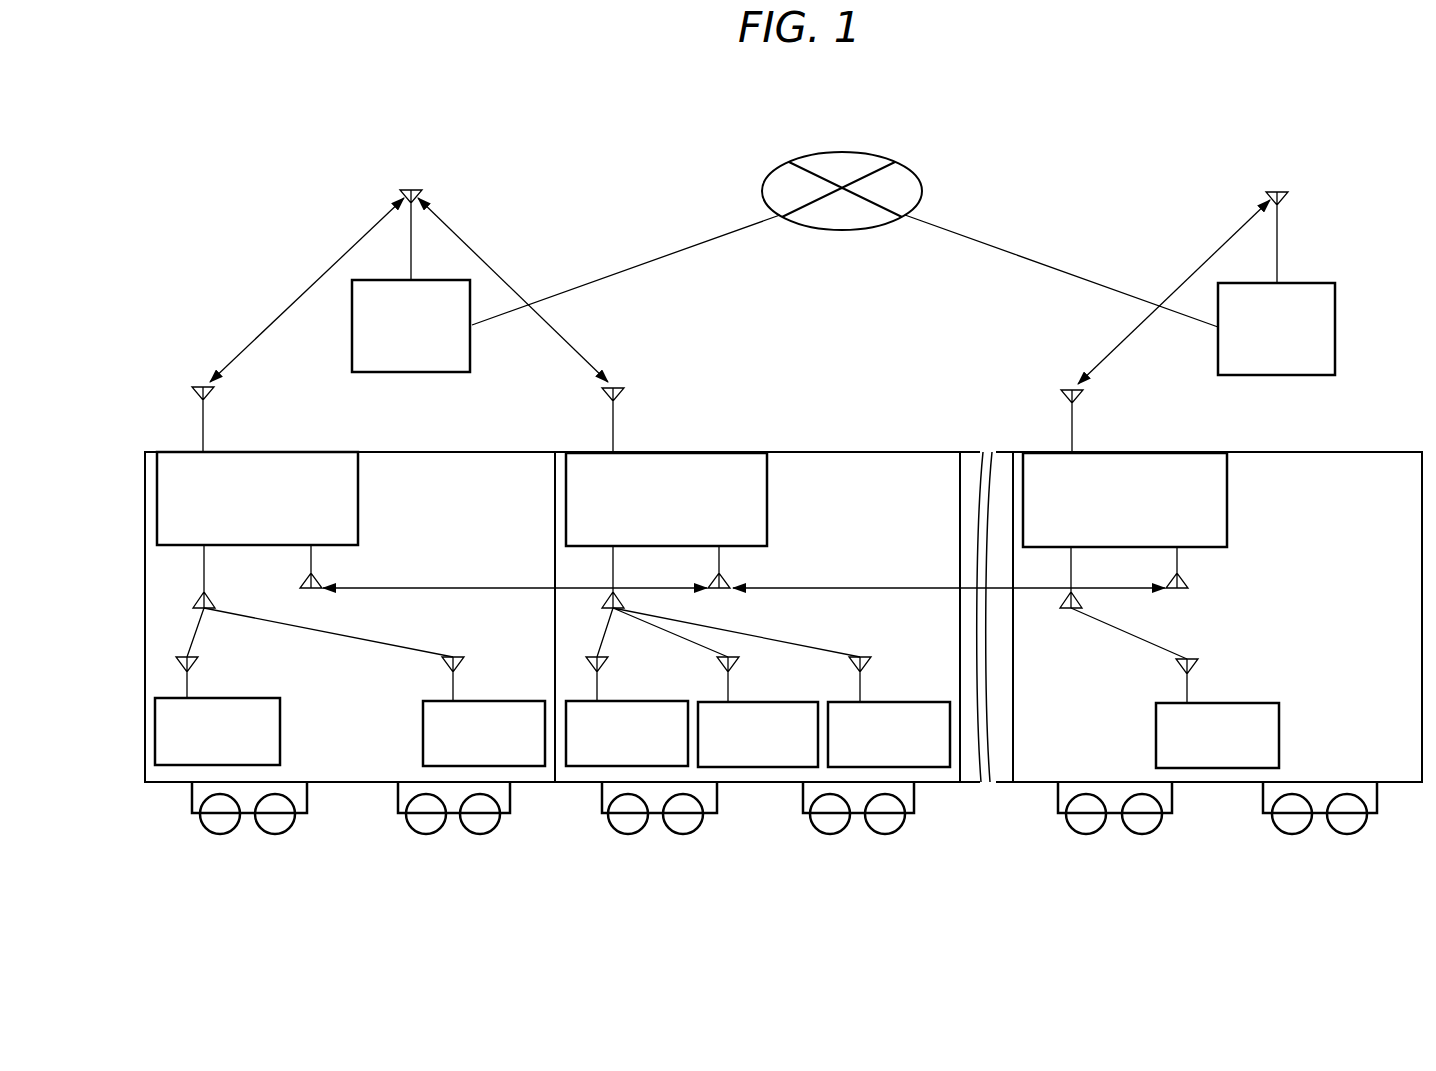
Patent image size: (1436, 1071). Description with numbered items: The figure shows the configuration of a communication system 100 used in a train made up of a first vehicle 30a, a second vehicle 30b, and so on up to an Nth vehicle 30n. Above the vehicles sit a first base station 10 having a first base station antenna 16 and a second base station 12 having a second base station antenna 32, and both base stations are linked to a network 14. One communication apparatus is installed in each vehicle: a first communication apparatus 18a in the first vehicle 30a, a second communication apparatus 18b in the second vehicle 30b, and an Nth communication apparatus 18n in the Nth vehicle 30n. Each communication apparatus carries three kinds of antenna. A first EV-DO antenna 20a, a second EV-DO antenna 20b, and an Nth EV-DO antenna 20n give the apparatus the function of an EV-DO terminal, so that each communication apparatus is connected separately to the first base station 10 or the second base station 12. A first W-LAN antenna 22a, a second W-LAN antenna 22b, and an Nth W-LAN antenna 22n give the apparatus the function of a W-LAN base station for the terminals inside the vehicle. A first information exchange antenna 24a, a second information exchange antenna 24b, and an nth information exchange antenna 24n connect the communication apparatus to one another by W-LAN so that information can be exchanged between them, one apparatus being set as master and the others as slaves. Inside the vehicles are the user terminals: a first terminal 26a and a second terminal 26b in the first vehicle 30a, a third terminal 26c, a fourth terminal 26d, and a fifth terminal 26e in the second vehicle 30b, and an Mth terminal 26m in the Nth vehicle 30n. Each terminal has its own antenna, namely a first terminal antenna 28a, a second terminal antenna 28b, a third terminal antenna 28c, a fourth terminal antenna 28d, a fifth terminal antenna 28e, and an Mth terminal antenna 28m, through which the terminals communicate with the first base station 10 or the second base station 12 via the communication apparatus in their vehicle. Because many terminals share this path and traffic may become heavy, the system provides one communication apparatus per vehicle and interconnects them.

The communication system 100 is at (646, 118).
The network 14 is at (842, 152).
The first base station 10 is at (352, 325).
The second base station 12 is at (1335, 327).
The first base station antenna 16 is at (411, 253).
The second base station antenna 32 is at (1277, 255).
The first EV-DO antenna 20a is at (205, 428).
The second EV-DO antenna 20b is at (615, 428).
The Nth EV-DO antenna 20n is at (1074, 428).
The first communication apparatus 18a is at (358, 497).
The second communication apparatus 18b is at (767, 497).
The Nth communication apparatus 18n is at (1227, 497).
The first W-LAN antenna 22a is at (206, 568).
The second W-LAN antenna 22b is at (615, 568).
The Nth W-LAN antenna 22n is at (1073, 568).
The first information exchange antenna 24a is at (313, 566).
The second information exchange antenna 24b is at (721, 566).
The nth information exchange antenna 24n is at (1179, 566).
The first terminal 26a is at (264, 688).
The second terminal 26b is at (516, 701).
The third terminal 26c is at (658, 701).
The fourth terminal 26d is at (790, 702).
The fifth terminal 26e is at (921, 702).
The Mth terminal 26m is at (1279, 735).
The first terminal antenna 28a is at (189, 688).
The second terminal antenna 28b is at (455, 690).
The third terminal antenna 28c is at (599, 690).
The fourth terminal antenna 28d is at (730, 690).
The fifth terminal antenna 28e is at (862, 690).
The Mth terminal antenna 28m is at (1185, 686).
The first vehicle 30a is at (458, 452).
The second vehicle 30b is at (858, 452).
The Nth vehicle 30n is at (1322, 452).